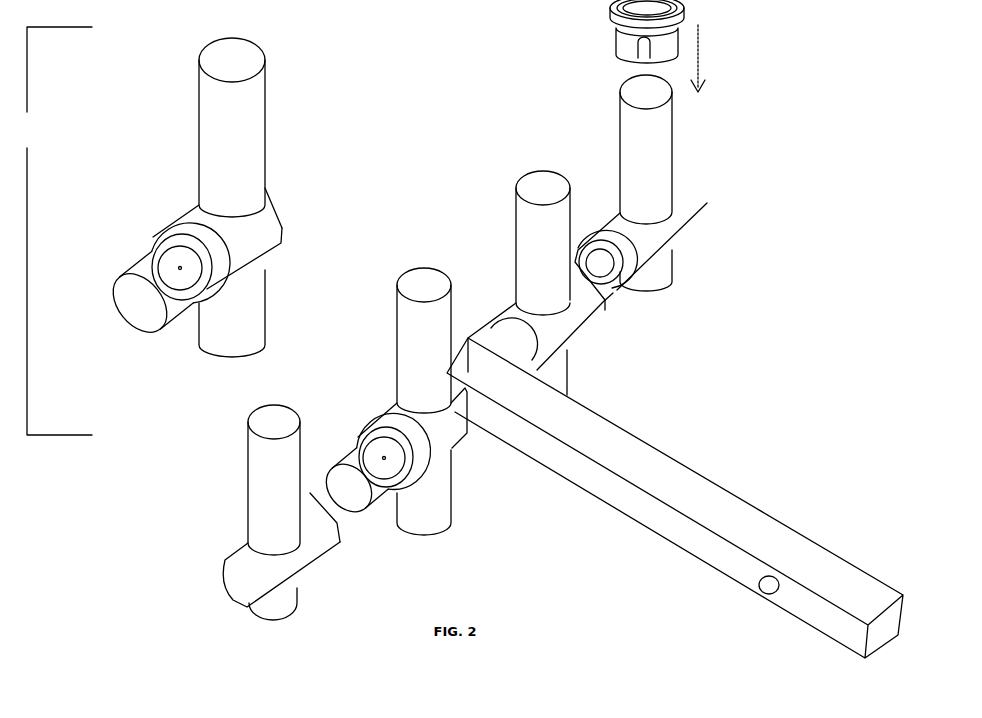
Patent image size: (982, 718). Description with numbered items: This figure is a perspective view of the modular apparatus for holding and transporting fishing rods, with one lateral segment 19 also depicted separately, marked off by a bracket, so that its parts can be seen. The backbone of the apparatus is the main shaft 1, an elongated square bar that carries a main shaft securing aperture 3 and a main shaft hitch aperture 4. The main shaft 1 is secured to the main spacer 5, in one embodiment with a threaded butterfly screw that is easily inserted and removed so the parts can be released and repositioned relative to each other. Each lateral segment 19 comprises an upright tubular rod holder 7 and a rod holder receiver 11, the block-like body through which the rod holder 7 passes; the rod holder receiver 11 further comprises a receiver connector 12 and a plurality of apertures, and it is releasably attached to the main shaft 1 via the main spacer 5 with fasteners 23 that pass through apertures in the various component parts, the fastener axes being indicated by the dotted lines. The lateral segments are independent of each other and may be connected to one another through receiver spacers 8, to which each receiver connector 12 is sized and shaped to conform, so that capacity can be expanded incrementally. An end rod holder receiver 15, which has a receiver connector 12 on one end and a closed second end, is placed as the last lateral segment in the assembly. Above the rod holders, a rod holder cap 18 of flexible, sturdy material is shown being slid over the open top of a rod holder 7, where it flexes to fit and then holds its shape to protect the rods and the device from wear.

The main shaft 1 is at (682, 460).
The main shaft securing aperture 3 is at (473, 380).
The main shaft hitch aperture 4 is at (758, 588).
The main spacer 5 is at (490, 340).
The rod holder 7 is at (268, 140).
The receiver spacer 8 is at (143, 265).
The rod holder receiver 11 is at (257, 240).
The receiver connector 12 is at (270, 203).
The end rod holder receiver 15 is at (228, 560).
The rod holder cap 18 is at (612, 12).
The lateral segment 19 is at (56, 231).
The fasteners 23 is at (184, 265).